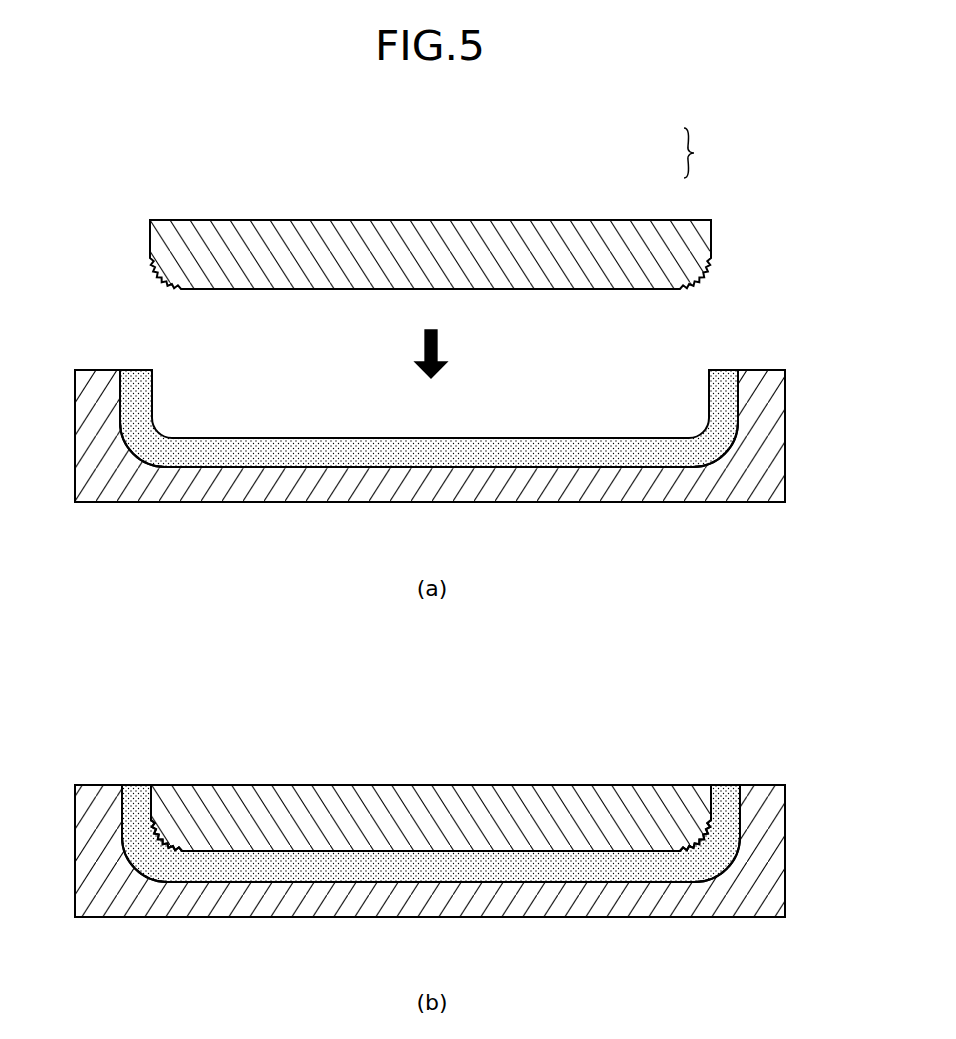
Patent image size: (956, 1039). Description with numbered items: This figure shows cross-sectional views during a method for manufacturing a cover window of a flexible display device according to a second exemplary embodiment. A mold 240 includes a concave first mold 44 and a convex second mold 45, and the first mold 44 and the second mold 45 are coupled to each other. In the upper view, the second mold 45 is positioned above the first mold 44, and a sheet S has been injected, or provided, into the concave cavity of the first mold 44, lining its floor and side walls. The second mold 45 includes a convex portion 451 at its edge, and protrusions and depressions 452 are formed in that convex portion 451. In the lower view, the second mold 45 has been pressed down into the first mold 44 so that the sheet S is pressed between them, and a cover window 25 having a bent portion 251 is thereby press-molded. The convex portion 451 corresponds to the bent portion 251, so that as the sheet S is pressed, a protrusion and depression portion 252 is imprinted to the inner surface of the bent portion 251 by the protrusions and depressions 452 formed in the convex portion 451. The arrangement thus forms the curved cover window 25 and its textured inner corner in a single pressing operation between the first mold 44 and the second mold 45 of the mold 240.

The mold 240 is at (694, 153).
The first mold 44 is at (291, 489).
The second mold 45 is at (519, 216).
The convex portion 451 is at (165, 275).
The protrusions and depressions 452 is at (163, 291).
The sheet S is at (548, 437).
The cover window 25 is at (474, 888).
The bent portion 251 is at (150, 862).
The protrusion and depression portion 252 is at (167, 833).